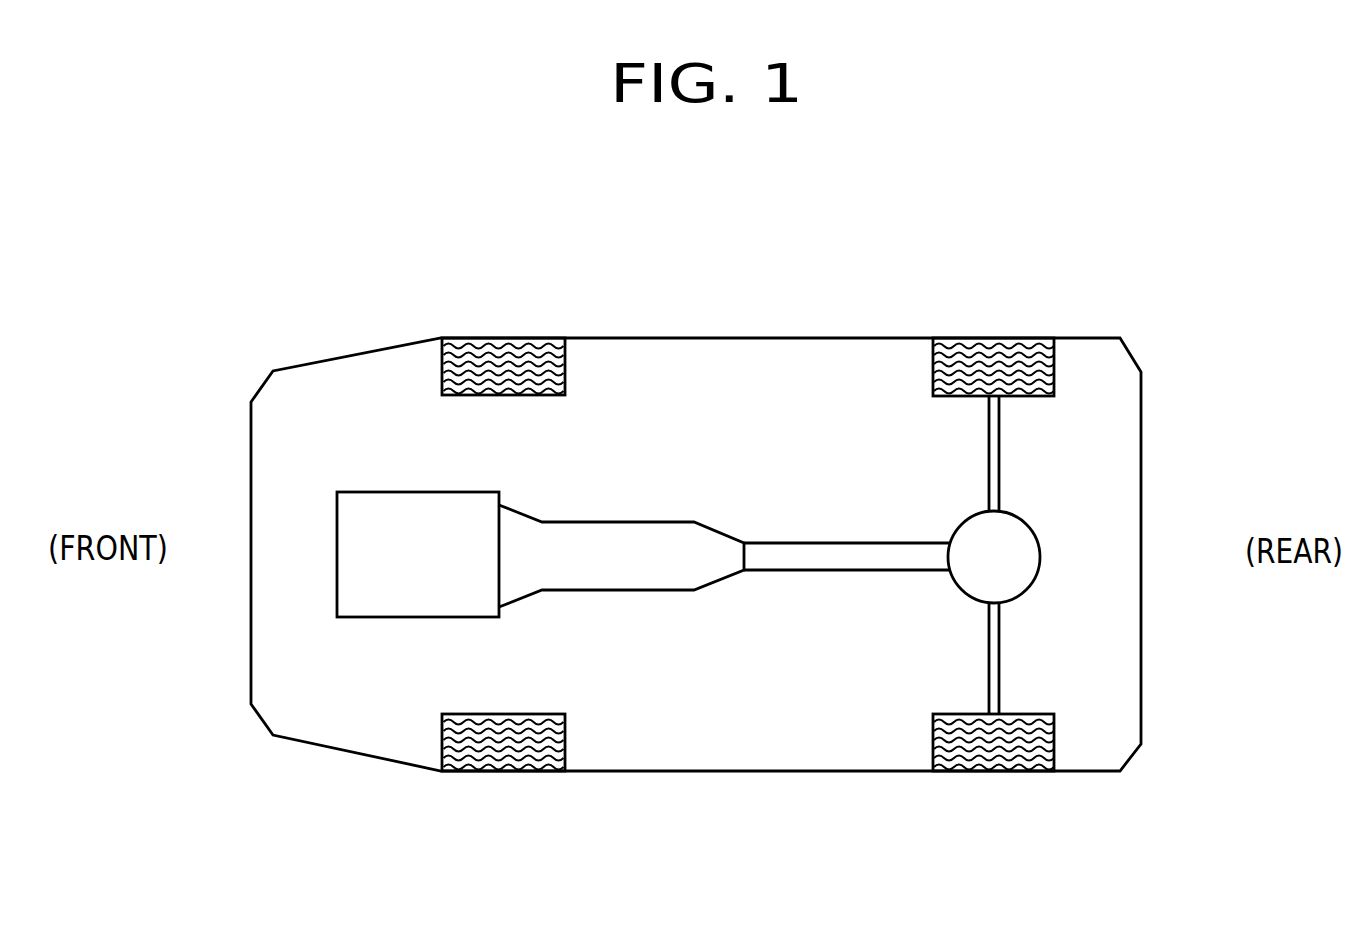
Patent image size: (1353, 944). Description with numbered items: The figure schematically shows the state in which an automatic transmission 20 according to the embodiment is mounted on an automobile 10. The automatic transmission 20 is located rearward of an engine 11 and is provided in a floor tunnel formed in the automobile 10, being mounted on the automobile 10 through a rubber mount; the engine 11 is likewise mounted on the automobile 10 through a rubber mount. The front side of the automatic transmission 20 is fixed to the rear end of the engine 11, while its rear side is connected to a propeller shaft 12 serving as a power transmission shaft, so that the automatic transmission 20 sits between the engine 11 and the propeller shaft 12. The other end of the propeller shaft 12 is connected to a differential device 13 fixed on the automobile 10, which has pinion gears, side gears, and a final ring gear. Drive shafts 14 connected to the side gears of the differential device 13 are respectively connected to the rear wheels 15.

The automobile 10 is at (1241, 345).
The engine 11 is at (357, 563).
The propeller shaft 12 is at (852, 550).
The differential device 13 is at (1025, 550).
The drive shaft 14 is at (995, 457).
The rear wheel 15 is at (1032, 343).
The automatic transmission 20 is at (609, 511).